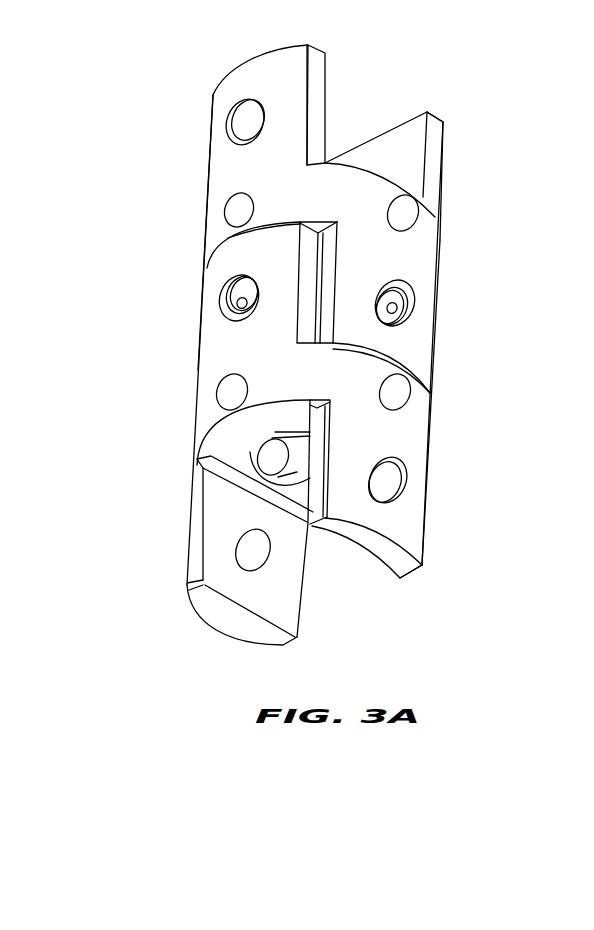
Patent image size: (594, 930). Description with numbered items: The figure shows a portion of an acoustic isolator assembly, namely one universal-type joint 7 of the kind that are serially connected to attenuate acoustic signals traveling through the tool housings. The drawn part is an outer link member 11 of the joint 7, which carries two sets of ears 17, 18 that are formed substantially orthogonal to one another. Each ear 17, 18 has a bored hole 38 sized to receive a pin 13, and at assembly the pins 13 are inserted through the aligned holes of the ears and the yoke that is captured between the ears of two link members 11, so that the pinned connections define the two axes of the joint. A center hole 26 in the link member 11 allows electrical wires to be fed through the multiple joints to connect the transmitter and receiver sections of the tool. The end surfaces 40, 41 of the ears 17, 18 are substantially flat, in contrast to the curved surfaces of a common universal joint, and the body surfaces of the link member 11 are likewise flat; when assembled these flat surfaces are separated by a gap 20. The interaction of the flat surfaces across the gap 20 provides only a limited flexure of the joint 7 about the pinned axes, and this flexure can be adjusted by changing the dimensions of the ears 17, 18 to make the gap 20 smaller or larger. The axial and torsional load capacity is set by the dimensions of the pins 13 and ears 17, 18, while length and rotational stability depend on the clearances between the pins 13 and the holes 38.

The universal joint 7 is at (337, 345).
The outer link member 11 is at (322, 345).
The pin 13 is at (227, 320).
The ear 17 is at (198, 318).
The ear 18 is at (435, 328).
The gap 20 is at (222, 247).
The center hole 26 is at (258, 492).
The bored hole 38 is at (243, 114).
The end surface 40 is at (424, 112).
The end surface 41 is at (410, 570).